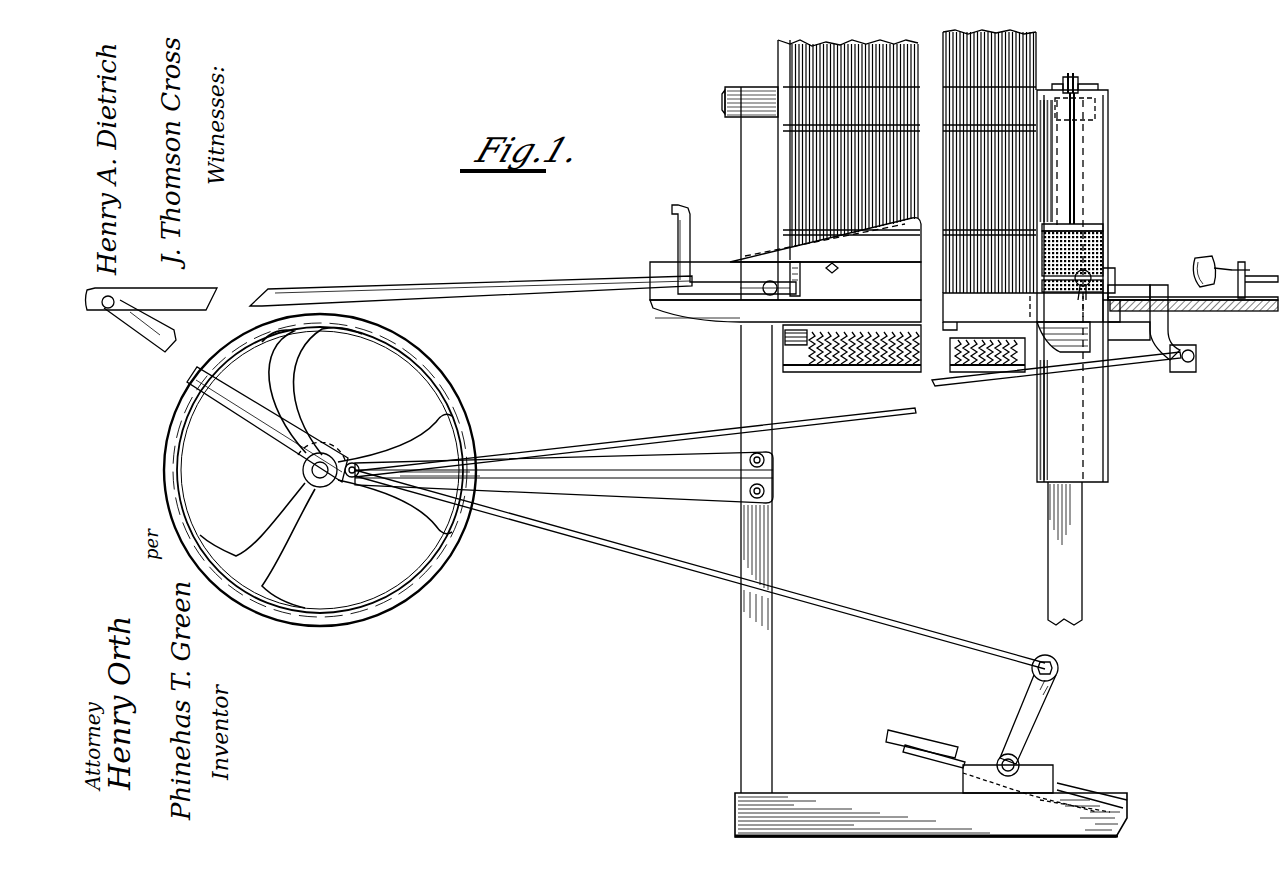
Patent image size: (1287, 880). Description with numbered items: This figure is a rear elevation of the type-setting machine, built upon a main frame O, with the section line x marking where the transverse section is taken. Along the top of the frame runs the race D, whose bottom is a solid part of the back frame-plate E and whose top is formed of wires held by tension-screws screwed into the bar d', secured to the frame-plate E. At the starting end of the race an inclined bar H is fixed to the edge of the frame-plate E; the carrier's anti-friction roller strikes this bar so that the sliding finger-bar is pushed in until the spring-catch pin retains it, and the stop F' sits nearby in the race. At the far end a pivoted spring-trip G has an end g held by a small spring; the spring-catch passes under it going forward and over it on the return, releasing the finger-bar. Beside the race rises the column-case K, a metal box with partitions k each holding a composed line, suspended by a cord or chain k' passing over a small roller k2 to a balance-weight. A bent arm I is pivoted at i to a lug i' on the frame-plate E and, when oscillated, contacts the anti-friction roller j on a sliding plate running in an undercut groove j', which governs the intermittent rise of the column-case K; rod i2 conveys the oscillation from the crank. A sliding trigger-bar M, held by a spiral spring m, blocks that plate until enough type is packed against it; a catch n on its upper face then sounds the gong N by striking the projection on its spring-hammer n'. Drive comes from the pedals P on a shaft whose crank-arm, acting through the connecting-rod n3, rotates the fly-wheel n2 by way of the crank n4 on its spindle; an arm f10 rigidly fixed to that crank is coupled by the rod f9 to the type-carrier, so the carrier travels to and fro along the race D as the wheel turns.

The main frame O is at (745, 367).
The section line x is at (1035, 825).
The bar d' is at (825, 240).
The stop F' is at (814, 266).
The race D is at (785, 292).
The inclined bar H is at (734, 250).
The rod f9 is at (632, 272).
The wheel n2 is at (434, 384).
The crank pin n4 is at (340, 484).
The arm f10 is at (256, 418).
The connecting rod n3 is at (662, 566).
The catch n is at (1030, 715).
The pedals P is at (955, 737).
The column-case K is at (1108, 226).
The roller k2 is at (1080, 90).
The cord or chain k' is at (1077, 158).
The partitions k is at (1087, 295).
The back frame-plate E is at (1023, 311).
The pivoted spring-trip G is at (1032, 298).
The end of spring-trip g is at (1050, 280).
The bar i2 is at (998, 380).
The anti-friction roller j is at (1120, 271).
The bent arm I is at (1130, 279).
The undercut groove j' is at (1165, 305).
The pivot i is at (1129, 325).
The lug i' is at (1140, 318).
The spiral spring m is at (1212, 305).
The sliding trigger-bar M is at (1214, 280).
The gong N is at (1212, 260).
The spring-hammer n' is at (1261, 272).